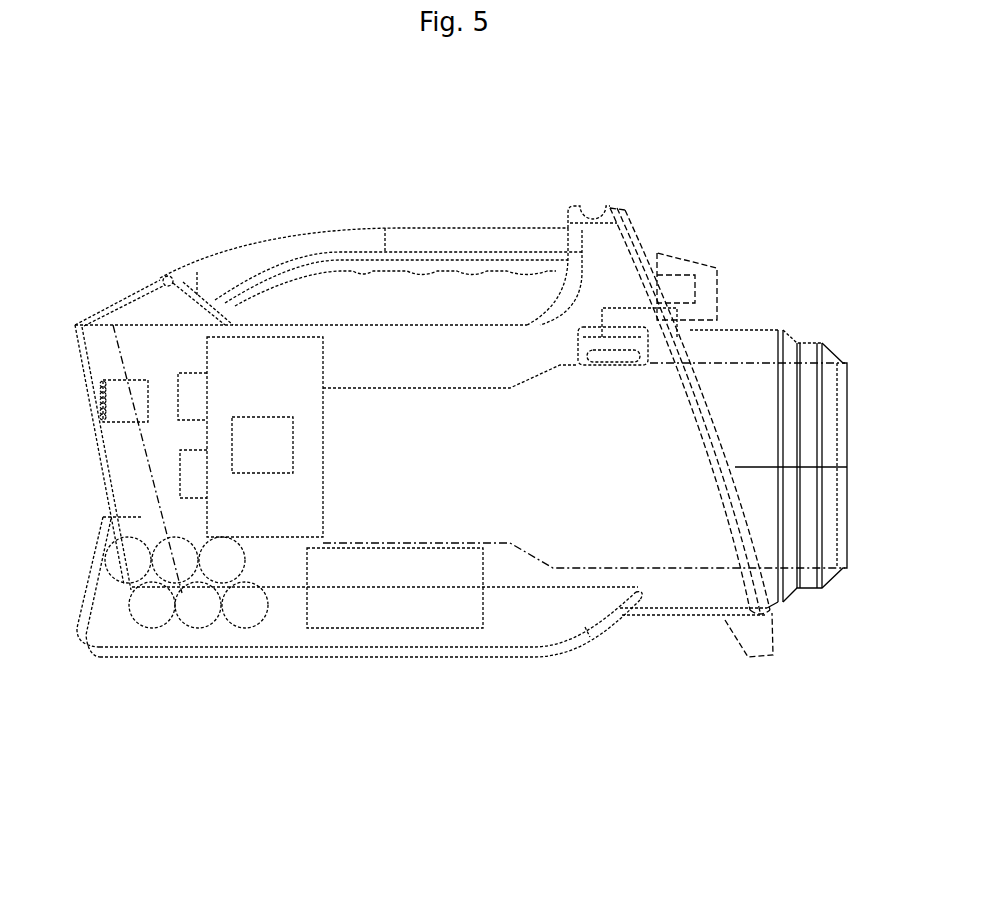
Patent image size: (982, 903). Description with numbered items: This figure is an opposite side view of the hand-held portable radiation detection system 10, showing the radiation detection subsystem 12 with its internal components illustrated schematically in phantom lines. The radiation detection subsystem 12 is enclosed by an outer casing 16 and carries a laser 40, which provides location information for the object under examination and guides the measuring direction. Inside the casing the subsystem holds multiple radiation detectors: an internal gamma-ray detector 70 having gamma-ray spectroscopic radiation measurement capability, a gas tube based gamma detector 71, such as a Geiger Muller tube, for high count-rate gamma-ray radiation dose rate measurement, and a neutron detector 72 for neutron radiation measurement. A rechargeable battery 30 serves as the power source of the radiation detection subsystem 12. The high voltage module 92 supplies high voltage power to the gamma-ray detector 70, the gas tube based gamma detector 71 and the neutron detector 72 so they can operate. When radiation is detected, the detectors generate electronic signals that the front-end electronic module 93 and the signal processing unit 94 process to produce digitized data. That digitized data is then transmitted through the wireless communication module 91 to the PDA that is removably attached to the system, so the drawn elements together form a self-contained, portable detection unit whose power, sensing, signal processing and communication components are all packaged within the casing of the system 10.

The hand-held portable radiation detection system 10 is at (410, 179).
The radiation detection subsystem 12 is at (767, 352).
The outer casing 16 is at (727, 337).
The battery 30 is at (197, 602).
The laser 40 is at (690, 293).
The internal gamma-ray detector 70 is at (675, 528).
The gas tube based gamma detector 71 is at (630, 323).
The neutron detector 72 is at (395, 578).
The wireless communication module 91 is at (194, 470).
The high voltage module 92 is at (190, 397).
The front-end electronic module 93 is at (263, 387).
The signal processing unit 94 is at (252, 450).